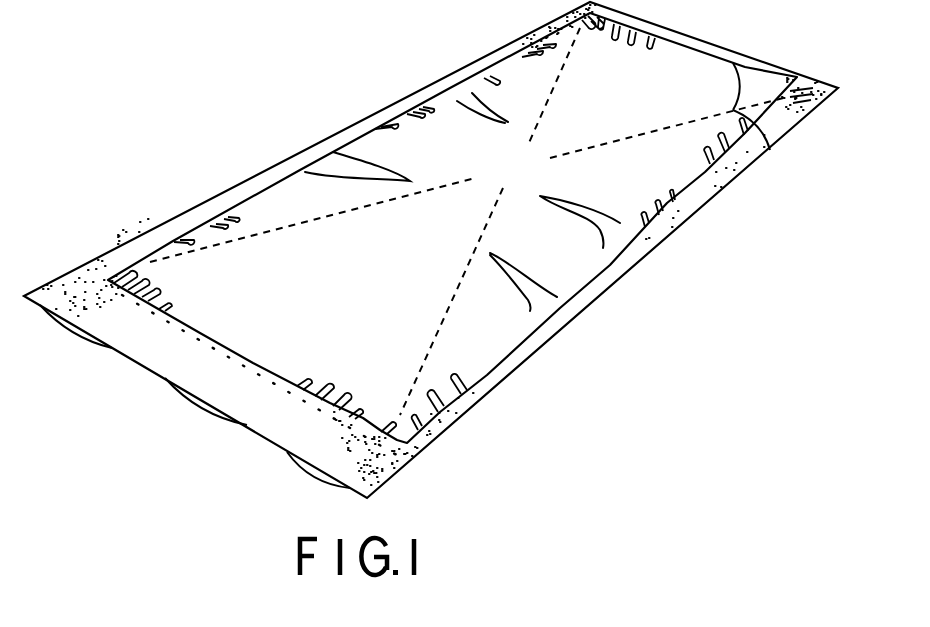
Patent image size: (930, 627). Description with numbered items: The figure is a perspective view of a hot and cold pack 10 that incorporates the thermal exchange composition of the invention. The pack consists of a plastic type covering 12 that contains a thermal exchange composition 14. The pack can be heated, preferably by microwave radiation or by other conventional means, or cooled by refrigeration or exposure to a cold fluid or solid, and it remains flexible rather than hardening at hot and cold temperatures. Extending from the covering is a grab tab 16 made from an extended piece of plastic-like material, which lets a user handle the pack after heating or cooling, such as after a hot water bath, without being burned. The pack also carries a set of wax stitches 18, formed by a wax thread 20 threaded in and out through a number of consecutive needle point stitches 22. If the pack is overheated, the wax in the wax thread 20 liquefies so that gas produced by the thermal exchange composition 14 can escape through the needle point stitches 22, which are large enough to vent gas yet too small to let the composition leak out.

The hot and cold pack 10 is at (280, 100).
The plastic type covering 12 is at (540, 347).
The thermal exchange composition 14 is at (584, 272).
The grab tab 16 is at (190, 363).
The wax stitches 18 is at (546, 103).
The wax thread 20 is at (735, 109).
The needle point stitches 22 is at (770, 150).